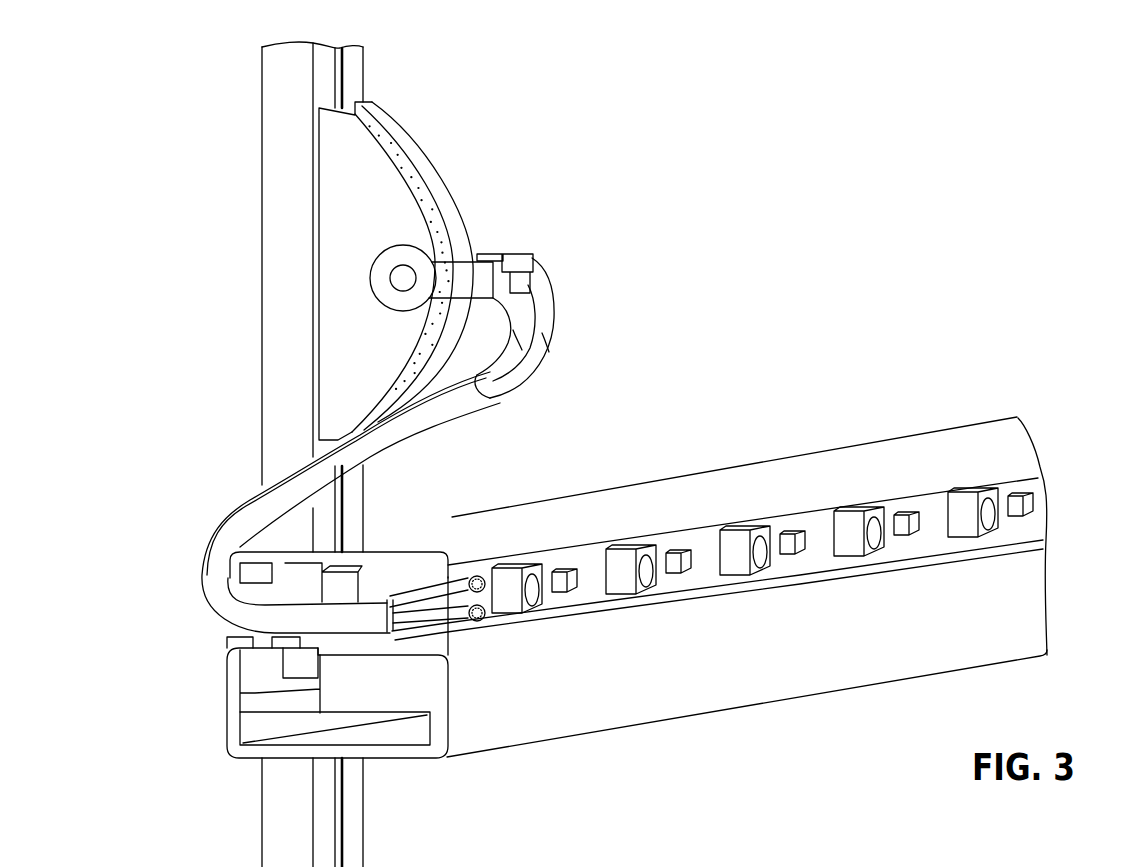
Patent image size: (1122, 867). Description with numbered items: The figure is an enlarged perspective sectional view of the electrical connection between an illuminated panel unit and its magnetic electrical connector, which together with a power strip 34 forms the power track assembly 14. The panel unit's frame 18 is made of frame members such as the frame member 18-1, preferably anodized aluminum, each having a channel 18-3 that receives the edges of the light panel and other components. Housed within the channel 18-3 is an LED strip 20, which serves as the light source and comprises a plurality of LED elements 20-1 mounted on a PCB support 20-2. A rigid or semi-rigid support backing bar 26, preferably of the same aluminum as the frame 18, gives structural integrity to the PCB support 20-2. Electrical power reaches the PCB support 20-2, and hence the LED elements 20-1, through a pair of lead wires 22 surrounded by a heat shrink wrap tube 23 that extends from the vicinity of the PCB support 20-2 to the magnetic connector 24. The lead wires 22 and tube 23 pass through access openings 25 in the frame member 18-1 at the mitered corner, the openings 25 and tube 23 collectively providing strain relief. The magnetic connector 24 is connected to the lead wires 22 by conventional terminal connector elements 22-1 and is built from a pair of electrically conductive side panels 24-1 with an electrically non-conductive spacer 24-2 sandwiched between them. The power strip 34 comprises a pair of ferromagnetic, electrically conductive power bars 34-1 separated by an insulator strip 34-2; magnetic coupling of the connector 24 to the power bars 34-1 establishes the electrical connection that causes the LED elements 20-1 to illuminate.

The power track assembly 14 is at (503, 240).
The frame 18 is at (719, 585).
The frame member 18-1 is at (683, 508).
The channel 18-3 is at (576, 557).
The LED strip 20 is at (762, 531).
The LED elements 20-1 is at (509, 597).
The PCB support 20-2 is at (692, 583).
The lead wires 22 is at (550, 303).
The terminal connector elements 22-1 is at (513, 263).
The heat shrink wrap tube 23 is at (242, 524).
The magnetic connector 24 is at (437, 240).
The side panels 24-1 is at (457, 186).
The spacer 24-2 is at (405, 158).
The access openings 25 is at (236, 633).
The support backing bar 26 is at (388, 582).
The power strip 34 is at (260, 288).
The power bars 34-1 is at (350, 80).
The insulator strip 34-2 is at (343, 812).